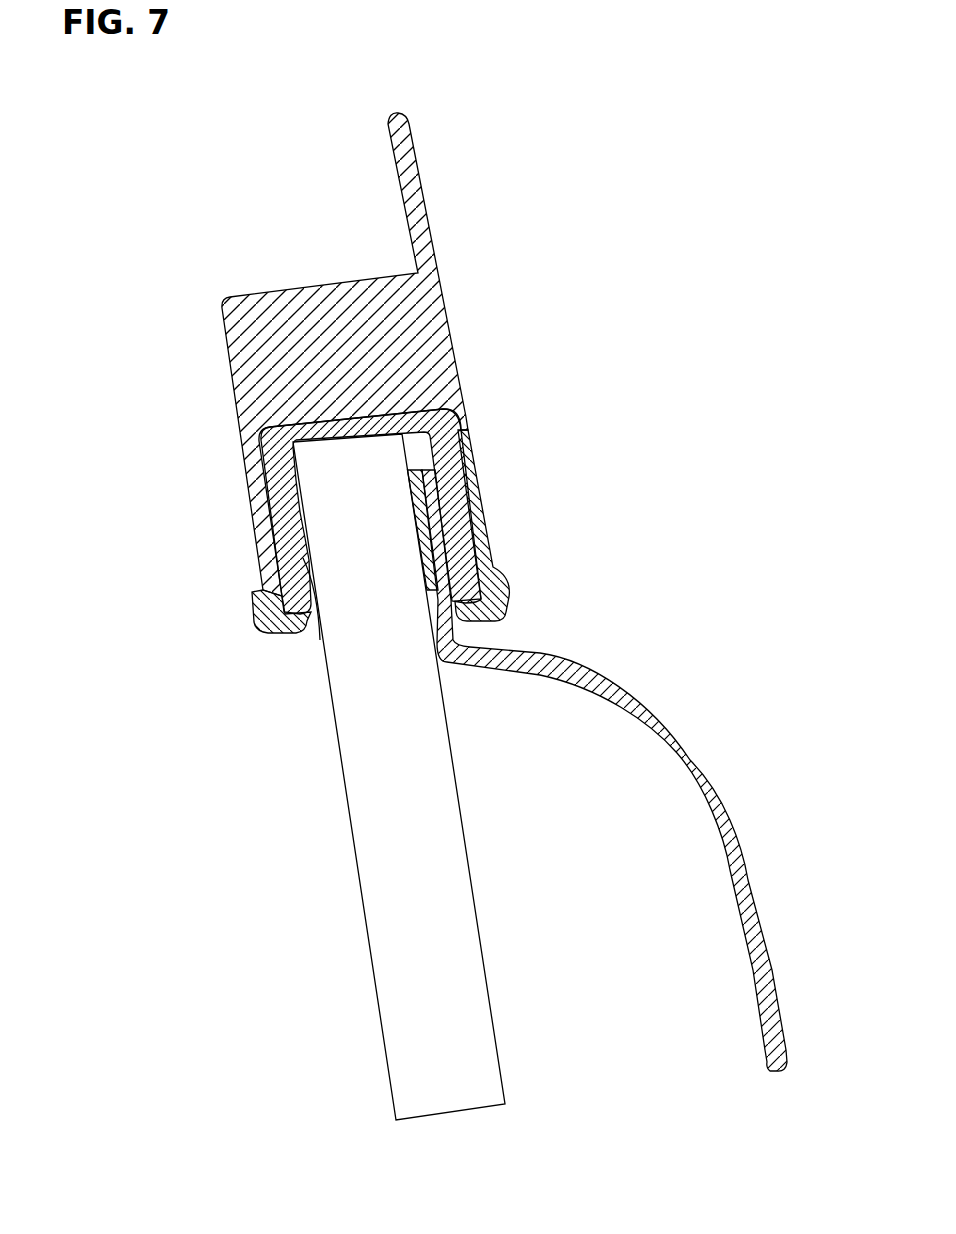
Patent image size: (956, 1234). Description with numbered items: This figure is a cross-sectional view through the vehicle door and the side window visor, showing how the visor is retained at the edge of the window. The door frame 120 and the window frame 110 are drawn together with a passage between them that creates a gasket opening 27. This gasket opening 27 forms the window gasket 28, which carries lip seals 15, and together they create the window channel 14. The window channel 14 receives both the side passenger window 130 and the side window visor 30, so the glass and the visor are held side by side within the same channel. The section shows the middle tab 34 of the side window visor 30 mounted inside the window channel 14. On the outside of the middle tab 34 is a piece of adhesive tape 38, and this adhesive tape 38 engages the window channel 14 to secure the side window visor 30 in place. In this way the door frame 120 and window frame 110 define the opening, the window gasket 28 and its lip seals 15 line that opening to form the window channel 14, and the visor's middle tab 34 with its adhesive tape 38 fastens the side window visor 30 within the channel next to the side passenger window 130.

The window channel 14 is at (422, 450).
The lip seals 15 is at (320, 640).
The gasket opening 27 is at (455, 403).
The window gasket 28 is at (450, 455).
The side window visor 30 is at (612, 770).
The middle tab 34 is at (427, 528).
The adhesive tape 38 is at (432, 545).
The window frame 110 is at (487, 578).
The door frame 120 is at (428, 300).
The side passenger window 130 is at (415, 906).